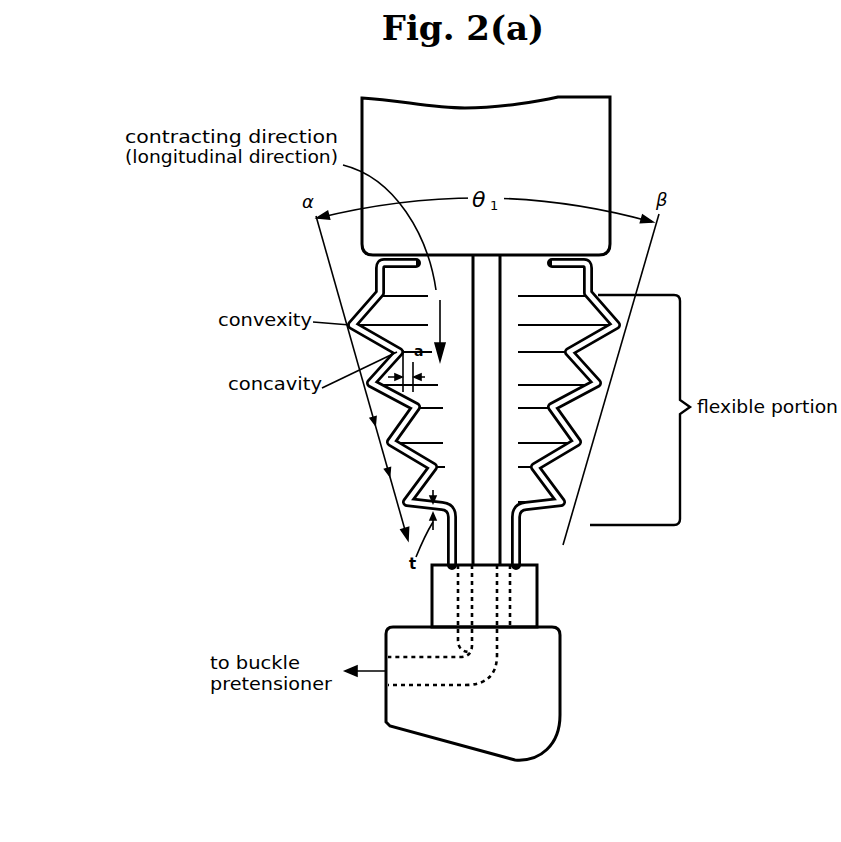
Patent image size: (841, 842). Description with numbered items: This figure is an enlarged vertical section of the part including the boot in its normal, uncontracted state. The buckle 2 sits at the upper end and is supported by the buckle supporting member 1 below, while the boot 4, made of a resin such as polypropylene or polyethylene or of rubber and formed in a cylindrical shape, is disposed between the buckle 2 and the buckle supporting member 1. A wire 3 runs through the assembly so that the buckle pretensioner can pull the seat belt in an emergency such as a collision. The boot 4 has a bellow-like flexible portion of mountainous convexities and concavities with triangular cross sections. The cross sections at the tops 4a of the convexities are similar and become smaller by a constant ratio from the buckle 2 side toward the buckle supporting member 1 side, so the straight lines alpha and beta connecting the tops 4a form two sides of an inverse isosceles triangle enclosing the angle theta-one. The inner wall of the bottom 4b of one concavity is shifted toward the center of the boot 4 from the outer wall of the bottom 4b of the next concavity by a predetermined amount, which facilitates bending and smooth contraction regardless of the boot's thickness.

The buckle supporting member 1 is at (548, 654).
The buckle 2 is at (588, 141).
The wire 3 is at (488, 375).
The boot 4 is at (374, 303).
The tops of the convexities 4a is at (613, 327).
The bottom of the concavity 4b is at (603, 352).